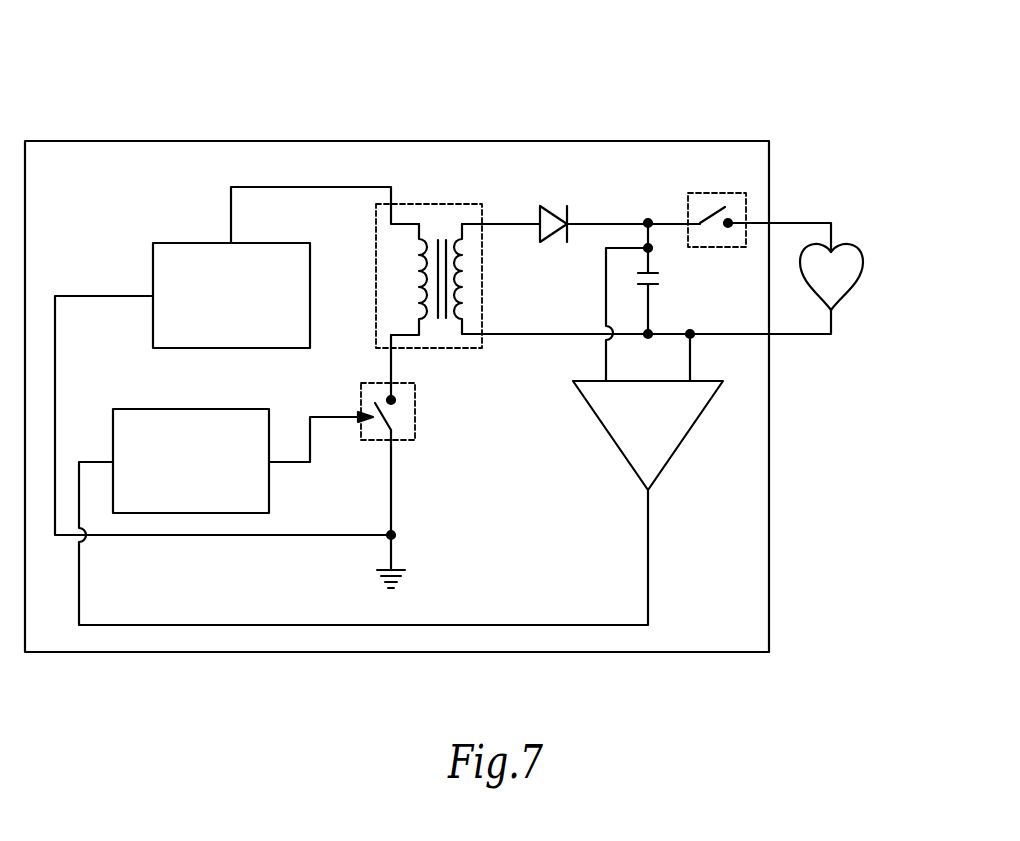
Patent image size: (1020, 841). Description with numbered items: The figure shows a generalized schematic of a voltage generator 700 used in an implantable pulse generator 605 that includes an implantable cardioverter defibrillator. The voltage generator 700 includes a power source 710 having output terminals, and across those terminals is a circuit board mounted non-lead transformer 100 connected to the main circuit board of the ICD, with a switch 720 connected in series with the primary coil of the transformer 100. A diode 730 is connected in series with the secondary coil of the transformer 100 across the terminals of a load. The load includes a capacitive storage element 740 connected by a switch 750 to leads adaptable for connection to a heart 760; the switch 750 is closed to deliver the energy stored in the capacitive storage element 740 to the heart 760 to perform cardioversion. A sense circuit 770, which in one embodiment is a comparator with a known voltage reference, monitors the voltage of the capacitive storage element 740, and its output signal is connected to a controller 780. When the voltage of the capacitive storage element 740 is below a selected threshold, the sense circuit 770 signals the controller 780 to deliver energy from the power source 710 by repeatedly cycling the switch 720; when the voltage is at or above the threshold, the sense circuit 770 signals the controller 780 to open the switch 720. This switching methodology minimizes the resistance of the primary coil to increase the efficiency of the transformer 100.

The voltage generator 700 is at (108, 42).
The implantable pulse generator 605 is at (398, 140).
The power source 710 is at (291, 241).
The controller 780 is at (249, 409).
The switch 720 is at (416, 411).
The transformer 100 is at (483, 273).
The diode 730 is at (547, 214).
The capacitive storage element 740 is at (660, 288).
The switch 750 is at (717, 195).
The heart 760 is at (864, 258).
The sense circuit 770 is at (688, 438).